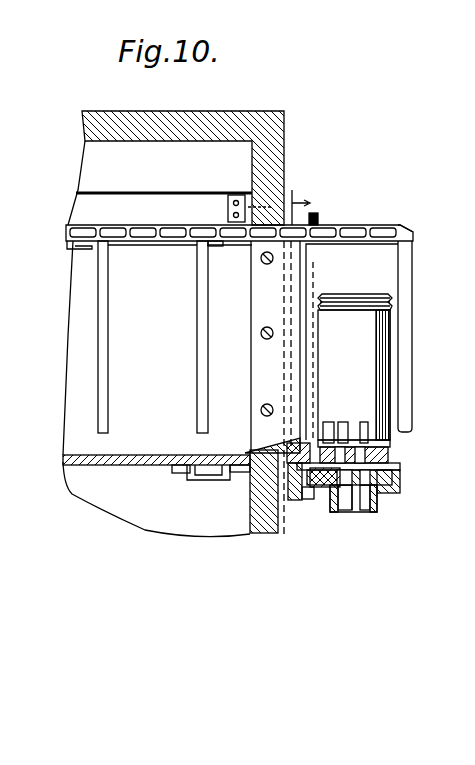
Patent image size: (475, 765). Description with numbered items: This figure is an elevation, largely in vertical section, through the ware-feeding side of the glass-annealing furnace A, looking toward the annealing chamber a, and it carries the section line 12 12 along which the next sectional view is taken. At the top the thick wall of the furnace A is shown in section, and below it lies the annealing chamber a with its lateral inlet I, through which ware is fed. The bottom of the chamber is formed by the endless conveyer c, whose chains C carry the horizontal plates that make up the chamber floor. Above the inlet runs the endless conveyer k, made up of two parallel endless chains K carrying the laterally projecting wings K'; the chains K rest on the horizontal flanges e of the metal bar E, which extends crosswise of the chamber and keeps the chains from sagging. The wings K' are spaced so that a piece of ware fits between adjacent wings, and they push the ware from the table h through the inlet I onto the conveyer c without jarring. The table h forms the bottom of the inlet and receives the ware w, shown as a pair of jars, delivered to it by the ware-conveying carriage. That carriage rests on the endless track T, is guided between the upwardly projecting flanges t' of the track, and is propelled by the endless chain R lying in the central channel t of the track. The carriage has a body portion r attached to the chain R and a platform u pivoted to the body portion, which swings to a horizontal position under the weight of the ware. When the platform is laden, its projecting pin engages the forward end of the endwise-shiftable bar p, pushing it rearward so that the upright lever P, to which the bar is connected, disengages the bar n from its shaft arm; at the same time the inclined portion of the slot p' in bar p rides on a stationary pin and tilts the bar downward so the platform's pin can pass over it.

The glass-annealing furnace A is at (284, 116).
The annealing chamber a is at (243, 154).
The section line 12 12 is at (295, 369).
The upright lever P is at (318, 216).
The metal bar E is at (88, 207).
The endless chains K is at (216, 236).
The endless conveyer k is at (412, 233).
The flanges e is at (92, 248).
The wings K' is at (255, 337).
The bar n is at (464, 291).
The ware w is at (355, 367).
The table h is at (390, 446).
The platform u is at (400, 461).
The body portion r is at (400, 481).
The endless track T is at (392, 492).
The channel t is at (389, 518).
The endless chain R is at (370, 516).
The flanges t' is at (364, 560).
The bar p is at (325, 567).
The slot p' is at (328, 544).
The inlet I is at (267, 533).
The conveyer c is at (198, 477).
The chains C is at (208, 489).